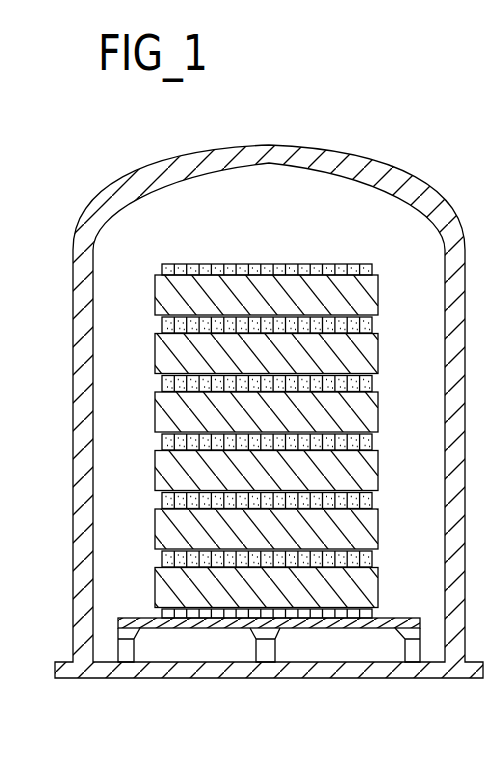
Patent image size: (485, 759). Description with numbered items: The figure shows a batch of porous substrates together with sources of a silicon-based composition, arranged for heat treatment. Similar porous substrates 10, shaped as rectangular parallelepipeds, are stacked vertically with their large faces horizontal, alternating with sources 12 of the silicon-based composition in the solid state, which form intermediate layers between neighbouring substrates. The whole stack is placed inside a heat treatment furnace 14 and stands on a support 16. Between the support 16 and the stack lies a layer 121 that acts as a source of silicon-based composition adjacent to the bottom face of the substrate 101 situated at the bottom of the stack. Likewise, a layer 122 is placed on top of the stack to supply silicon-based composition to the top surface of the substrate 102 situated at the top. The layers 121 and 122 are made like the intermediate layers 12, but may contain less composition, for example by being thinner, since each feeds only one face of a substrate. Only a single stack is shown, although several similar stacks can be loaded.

The heat treatment furnace 14 is at (138, 228).
The support 16 is at (385, 620).
The porous substrate 10 is at (362, 465).
The substrate situated at the top of the stack 102 is at (348, 300).
The substrate situated at the bottom of the stack 101 is at (172, 583).
The source of Si-based composition 12 is at (163, 503).
The layer placed on top of the stack 122 is at (375, 273).
The layer acting as source adjacent to the bottom substrate 121 is at (163, 613).